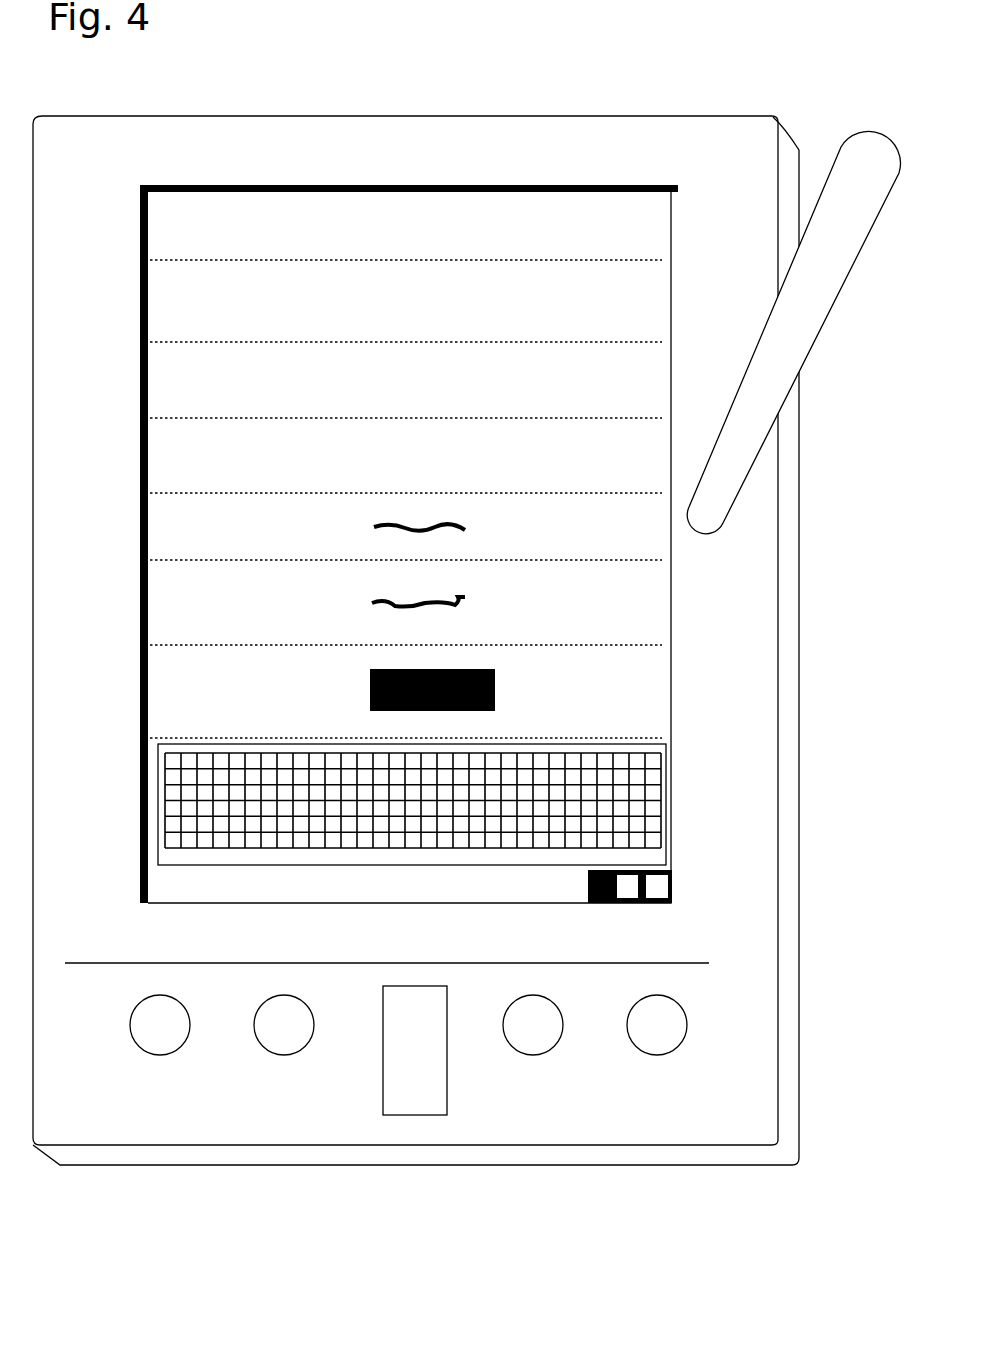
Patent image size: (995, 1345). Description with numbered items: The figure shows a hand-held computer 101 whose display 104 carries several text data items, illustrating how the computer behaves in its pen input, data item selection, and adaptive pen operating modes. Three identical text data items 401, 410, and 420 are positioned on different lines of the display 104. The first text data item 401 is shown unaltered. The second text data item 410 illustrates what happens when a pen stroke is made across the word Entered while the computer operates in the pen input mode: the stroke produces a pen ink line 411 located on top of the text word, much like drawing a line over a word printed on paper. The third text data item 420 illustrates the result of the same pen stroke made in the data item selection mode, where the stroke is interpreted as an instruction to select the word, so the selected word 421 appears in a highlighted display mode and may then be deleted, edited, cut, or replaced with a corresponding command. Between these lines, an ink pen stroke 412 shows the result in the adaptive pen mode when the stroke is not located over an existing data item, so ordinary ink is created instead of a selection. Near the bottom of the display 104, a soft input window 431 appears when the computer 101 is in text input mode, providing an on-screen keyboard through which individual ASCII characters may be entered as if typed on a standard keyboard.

The hand-held computer 101 is at (352, 115).
The display 104 is at (667, 683).
The first text data item 401 is at (515, 367).
The second text data item 410 is at (515, 515).
The pen ink line 411 is at (430, 522).
The ink pen stroke 412 is at (422, 600).
The third text data item 420 is at (532, 677).
The selected word 421 is at (418, 668).
The soft input window 431 is at (653, 783).